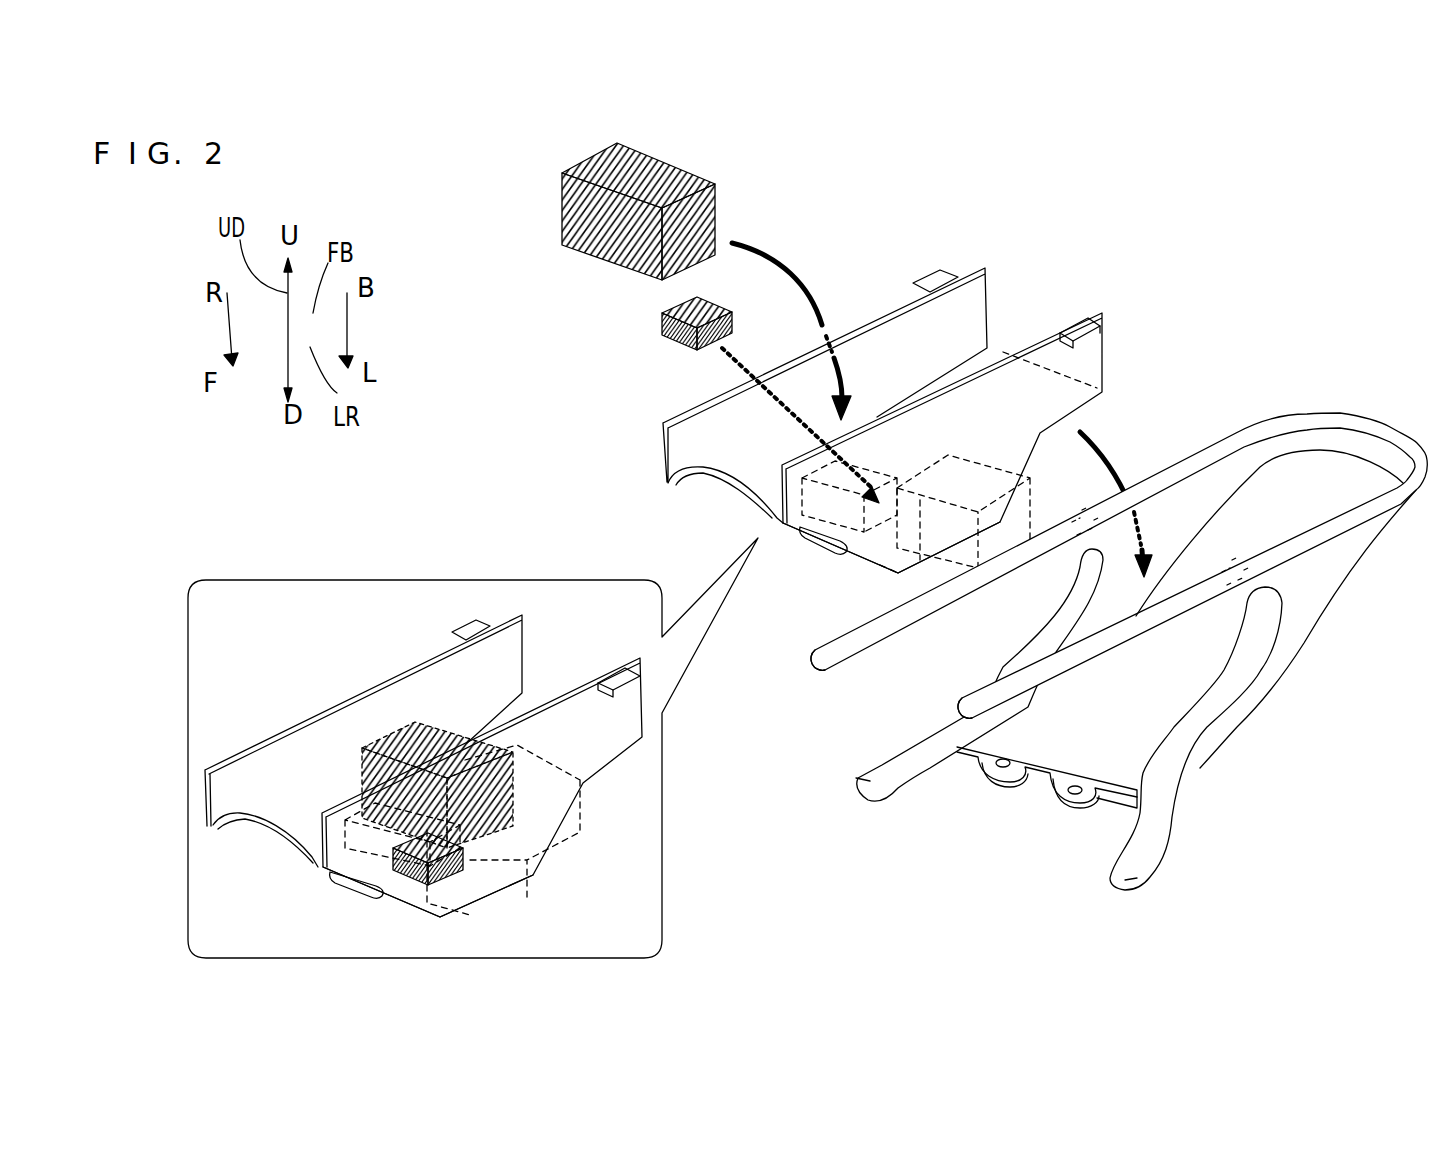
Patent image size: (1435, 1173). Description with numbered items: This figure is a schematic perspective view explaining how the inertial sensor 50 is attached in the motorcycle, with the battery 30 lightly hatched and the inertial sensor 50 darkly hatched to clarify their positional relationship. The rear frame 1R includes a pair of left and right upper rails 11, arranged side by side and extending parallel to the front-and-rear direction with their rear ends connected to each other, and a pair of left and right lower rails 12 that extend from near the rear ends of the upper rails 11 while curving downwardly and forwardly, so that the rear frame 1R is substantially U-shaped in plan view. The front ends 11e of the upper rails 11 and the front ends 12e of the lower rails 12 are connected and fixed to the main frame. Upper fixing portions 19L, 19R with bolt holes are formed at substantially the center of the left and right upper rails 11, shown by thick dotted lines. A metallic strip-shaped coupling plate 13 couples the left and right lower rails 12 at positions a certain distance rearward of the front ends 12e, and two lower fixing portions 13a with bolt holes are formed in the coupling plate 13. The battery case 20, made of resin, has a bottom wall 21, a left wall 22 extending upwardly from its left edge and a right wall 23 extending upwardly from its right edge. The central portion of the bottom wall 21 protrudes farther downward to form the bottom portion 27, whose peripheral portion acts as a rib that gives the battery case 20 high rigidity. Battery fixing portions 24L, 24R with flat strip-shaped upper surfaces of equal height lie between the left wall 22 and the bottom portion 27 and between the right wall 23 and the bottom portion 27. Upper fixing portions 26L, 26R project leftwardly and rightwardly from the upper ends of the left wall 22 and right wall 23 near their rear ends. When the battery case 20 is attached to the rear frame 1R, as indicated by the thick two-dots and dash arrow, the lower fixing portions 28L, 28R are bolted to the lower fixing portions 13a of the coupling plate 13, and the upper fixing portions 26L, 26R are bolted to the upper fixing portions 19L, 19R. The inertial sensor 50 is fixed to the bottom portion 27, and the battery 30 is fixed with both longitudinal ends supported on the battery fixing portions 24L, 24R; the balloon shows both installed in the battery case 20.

The rear frame 1R is at (1072, 614).
The upper rails 11 is at (1072, 551).
The front ends of the upper rails 11e is at (844, 700).
The lower rails 12 is at (1093, 705).
The front ends of the lower rails 12e is at (871, 781).
The strip-shaped coupling plate 13 is at (1022, 787).
The lower fixing portions 13a is at (973, 765).
The upper fixing portion 19R is at (1085, 500).
The upper fixing portion 19L is at (1238, 556).
The battery case 20 is at (681, 580).
The bottom wall 21 is at (720, 485).
The left wall 22 is at (1076, 394).
The right wall 23 is at (858, 327).
The battery fixing portion 24R is at (800, 470).
The battery fixing portion 24L is at (970, 500).
The upper fixing portion 26R is at (940, 280).
The upper fixing portion 26L is at (1085, 330).
The bottom portion 27 is at (895, 577).
The lower fixing portion 28R is at (855, 548).
The lower fixing portion 28L is at (888, 572).
The battery 30 is at (563, 200).
The inertial sensor 50 is at (662, 325).